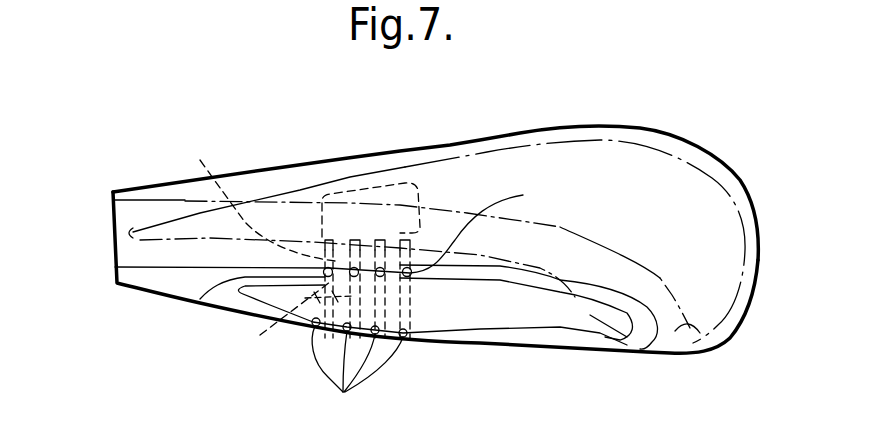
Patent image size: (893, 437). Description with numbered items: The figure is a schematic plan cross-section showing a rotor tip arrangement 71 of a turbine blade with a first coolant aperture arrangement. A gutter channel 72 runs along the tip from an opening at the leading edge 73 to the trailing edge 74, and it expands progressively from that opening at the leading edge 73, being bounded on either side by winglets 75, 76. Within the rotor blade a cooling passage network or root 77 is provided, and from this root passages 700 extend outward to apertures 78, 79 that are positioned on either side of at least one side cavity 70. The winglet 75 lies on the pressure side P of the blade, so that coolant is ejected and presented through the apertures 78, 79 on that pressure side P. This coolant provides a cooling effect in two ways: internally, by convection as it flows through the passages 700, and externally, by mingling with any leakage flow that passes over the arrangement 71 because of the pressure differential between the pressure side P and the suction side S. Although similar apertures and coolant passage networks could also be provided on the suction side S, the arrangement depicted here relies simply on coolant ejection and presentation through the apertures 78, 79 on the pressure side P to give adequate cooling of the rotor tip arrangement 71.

The side cavity 70 is at (473, 330).
The rotor tip arrangement 71 is at (436, 117).
The gutter channel 72 is at (277, 223).
The leading edge 73 is at (677, 354).
The trailing edge 74 is at (107, 228).
The winglet 75 is at (302, 324).
The winglet 76 is at (693, 178).
The cooling passage network or root 77 is at (442, 186).
The aperture 78 is at (357, 381).
The aperture 79 is at (178, 313).
The passages 700 is at (265, 246).
The suction side S is at (380, 131).
The pressure side P is at (537, 346).